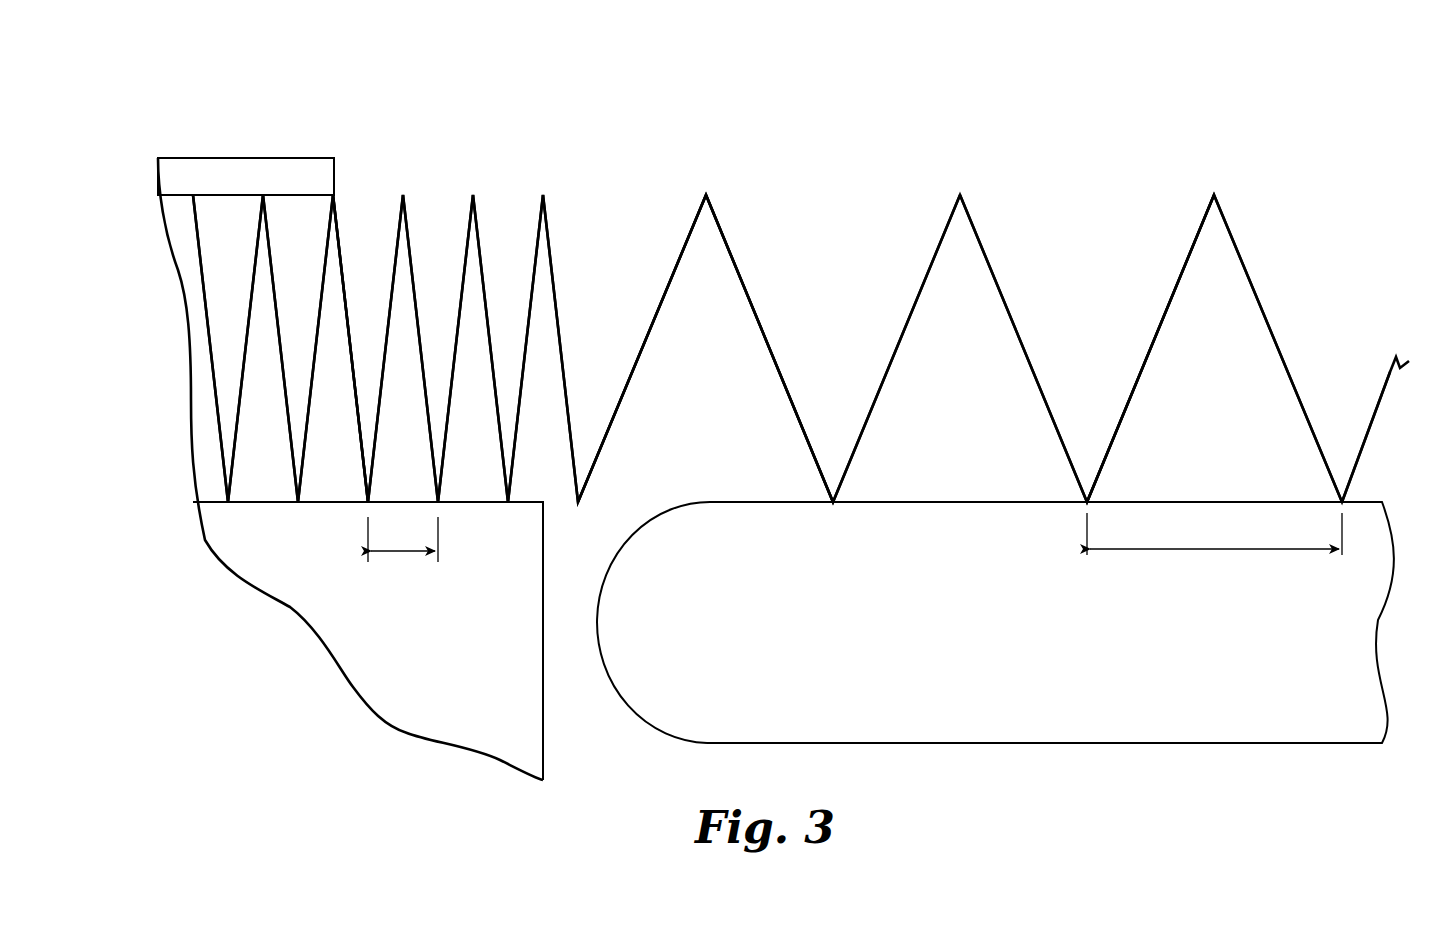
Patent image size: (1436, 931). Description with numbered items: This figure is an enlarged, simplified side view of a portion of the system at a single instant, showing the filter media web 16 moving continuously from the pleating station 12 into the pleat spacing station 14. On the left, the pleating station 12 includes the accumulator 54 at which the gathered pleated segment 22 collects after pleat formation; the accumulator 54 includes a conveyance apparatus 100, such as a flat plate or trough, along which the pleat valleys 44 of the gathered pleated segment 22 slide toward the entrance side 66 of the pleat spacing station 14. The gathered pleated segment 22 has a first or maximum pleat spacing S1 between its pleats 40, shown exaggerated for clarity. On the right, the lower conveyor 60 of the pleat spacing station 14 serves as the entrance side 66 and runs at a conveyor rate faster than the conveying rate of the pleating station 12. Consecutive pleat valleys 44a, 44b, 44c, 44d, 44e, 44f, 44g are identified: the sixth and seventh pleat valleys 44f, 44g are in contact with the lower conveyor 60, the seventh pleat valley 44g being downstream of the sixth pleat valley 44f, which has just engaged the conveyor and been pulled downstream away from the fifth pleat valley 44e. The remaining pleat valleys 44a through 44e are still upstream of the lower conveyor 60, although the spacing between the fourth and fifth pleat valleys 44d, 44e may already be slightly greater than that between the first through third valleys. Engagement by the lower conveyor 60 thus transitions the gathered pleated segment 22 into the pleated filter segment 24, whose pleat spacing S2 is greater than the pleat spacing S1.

The pleating station 12 is at (266, 141).
The pleat spacing station 14 is at (1157, 108).
The filter media web 16 is at (716, 210).
The gathered pleated segment 22 is at (348, 220).
The pleated filter segment 24 is at (1260, 239).
The pleats 40 is at (507, 203).
The pleat valleys 44 is at (228, 504).
The first pleat valley 44a is at (298, 504).
The second pleat valley 44b is at (368, 504).
The third pleat valley 44c is at (438, 504).
The fourth pleat valley 44d is at (508, 504).
The fifth pleat valley 44e is at (578, 504).
The sixth pleat valley 44f is at (833, 504).
The seventh pleat valley 44g is at (1087, 504).
The accumulator 54 is at (312, 588).
The lower conveyor 60 is at (1022, 645).
The entrance side 66 is at (601, 628).
The conveyance apparatus 100 is at (418, 676).
The first pleat spacing S1 is at (405, 553).
The second pleat spacing S2 is at (1212, 551).